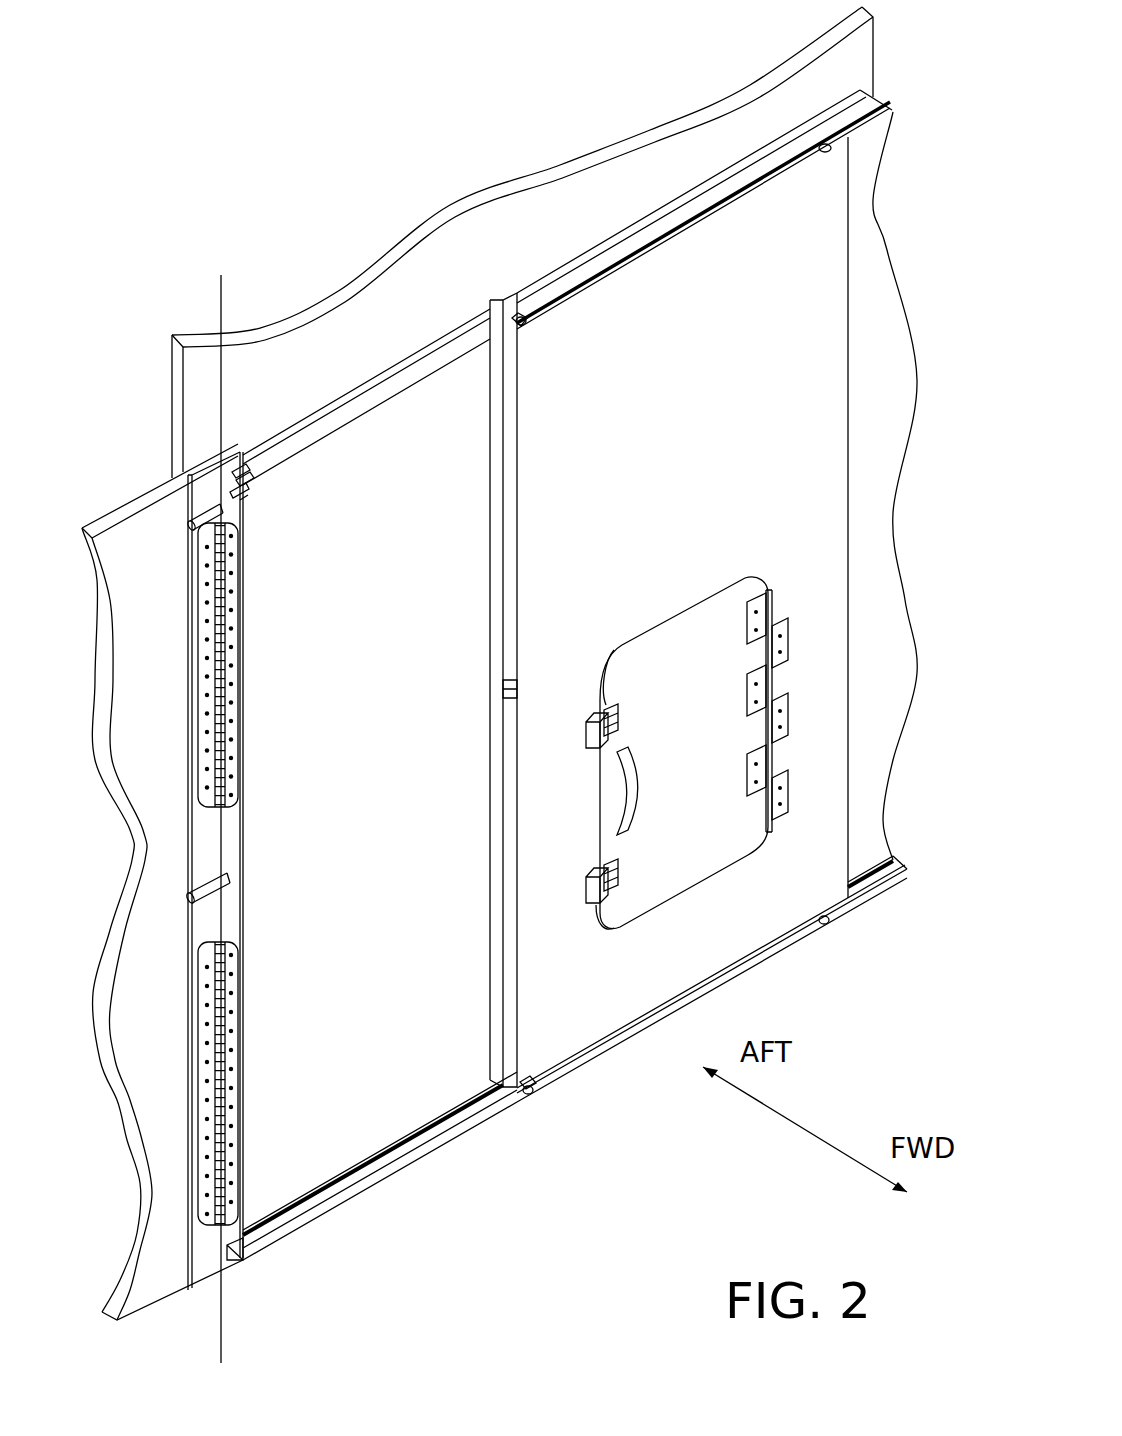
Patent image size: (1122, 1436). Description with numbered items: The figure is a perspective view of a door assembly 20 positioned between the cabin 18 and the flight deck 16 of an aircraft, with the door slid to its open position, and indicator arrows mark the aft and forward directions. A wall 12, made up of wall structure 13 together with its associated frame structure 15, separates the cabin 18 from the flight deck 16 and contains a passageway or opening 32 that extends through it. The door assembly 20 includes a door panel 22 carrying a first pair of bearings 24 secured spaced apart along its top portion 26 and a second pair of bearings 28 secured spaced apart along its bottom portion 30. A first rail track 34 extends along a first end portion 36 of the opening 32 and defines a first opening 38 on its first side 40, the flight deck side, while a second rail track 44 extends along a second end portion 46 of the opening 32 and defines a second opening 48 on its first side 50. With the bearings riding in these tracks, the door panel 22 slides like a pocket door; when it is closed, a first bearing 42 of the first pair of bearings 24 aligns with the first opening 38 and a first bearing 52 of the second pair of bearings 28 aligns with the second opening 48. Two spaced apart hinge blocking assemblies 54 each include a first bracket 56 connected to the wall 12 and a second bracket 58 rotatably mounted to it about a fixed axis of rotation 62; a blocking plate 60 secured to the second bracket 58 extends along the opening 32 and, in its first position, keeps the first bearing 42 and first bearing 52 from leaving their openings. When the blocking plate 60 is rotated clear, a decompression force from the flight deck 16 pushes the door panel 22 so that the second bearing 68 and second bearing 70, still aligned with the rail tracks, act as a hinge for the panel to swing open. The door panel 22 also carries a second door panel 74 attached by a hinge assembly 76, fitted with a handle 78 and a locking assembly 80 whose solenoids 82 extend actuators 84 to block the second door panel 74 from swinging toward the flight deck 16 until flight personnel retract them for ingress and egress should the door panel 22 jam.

The wall 12 is at (885, 620).
The wall structure 13 is at (597, 188).
The frame structure 15 is at (203, 490).
The flight deck 16 is at (647, 1223).
The cabin 18 is at (424, 698).
The door assembly 20 is at (427, 190).
The door panel 22 is at (748, 458).
The first pair of bearings 24 is at (827, 147).
The top portion 26 is at (672, 265).
The second pair of bearings 28 is at (823, 923).
The bottom portion 30 is at (718, 965).
The opening 32 is at (368, 868).
The first rail track 34 is at (472, 335).
The first end portion 36 is at (376, 436).
The first opening 38 is at (247, 462).
The first side 40 is at (287, 508).
The first bearing 42 is at (520, 322).
The second rail track 44 is at (365, 1192).
The second end portion 46 is at (380, 1152).
The second opening 48 is at (256, 1266).
The first side 50 is at (359, 1260).
The first bearing 52 is at (527, 1083).
The hinge blocking assembly 54 is at (252, 732).
The first bracket 56 is at (198, 648).
The second bracket 58 is at (246, 622).
The blocking plate 60 is at (237, 812).
The fixed axis of rotation 62 is at (221, 290).
The second bearing 68 is at (850, 152).
The second bearing 70 is at (835, 885).
The second door panel 74 is at (697, 713).
The hinge assembly 76 is at (800, 620).
The handle 78 is at (637, 785).
The locking assembly 80 is at (632, 690).
The solenoids 82 is at (600, 717).
The actuators 84 is at (610, 700).